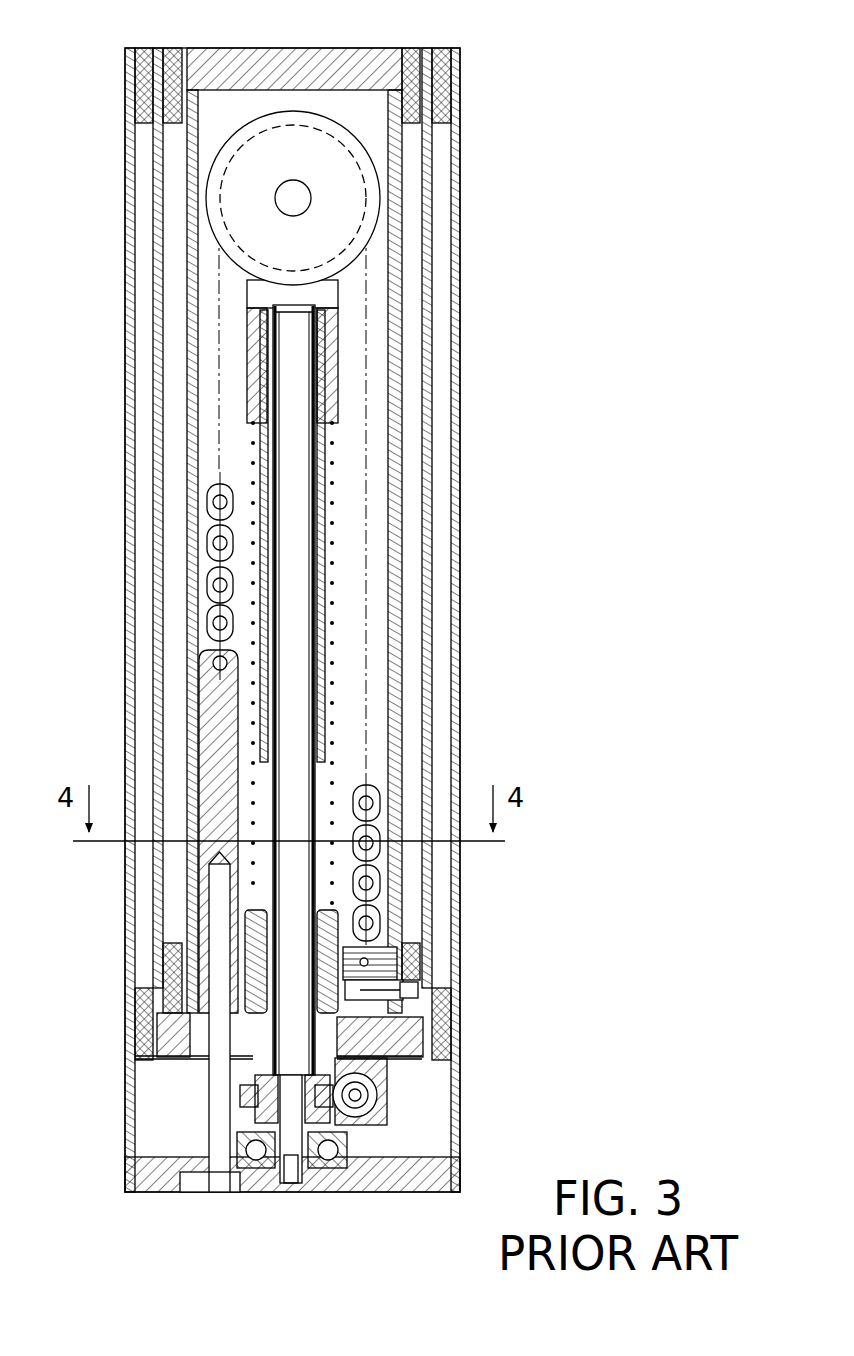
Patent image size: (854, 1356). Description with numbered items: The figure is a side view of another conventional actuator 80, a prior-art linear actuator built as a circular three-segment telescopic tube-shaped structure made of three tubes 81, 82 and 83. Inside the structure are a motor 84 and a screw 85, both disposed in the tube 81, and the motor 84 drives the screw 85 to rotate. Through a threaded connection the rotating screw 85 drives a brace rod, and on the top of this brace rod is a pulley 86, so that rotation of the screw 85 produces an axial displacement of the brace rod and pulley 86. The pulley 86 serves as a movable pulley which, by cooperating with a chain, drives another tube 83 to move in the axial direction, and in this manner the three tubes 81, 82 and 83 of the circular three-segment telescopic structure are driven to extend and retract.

The conventional actuator 80 is at (560, 60).
The tube 81 is at (455, 283).
The tube 82 is at (427, 338).
The tube 83 is at (398, 417).
The motor 84 is at (376, 1125).
The screw 85 is at (297, 527).
The pulley 86 is at (210, 192).